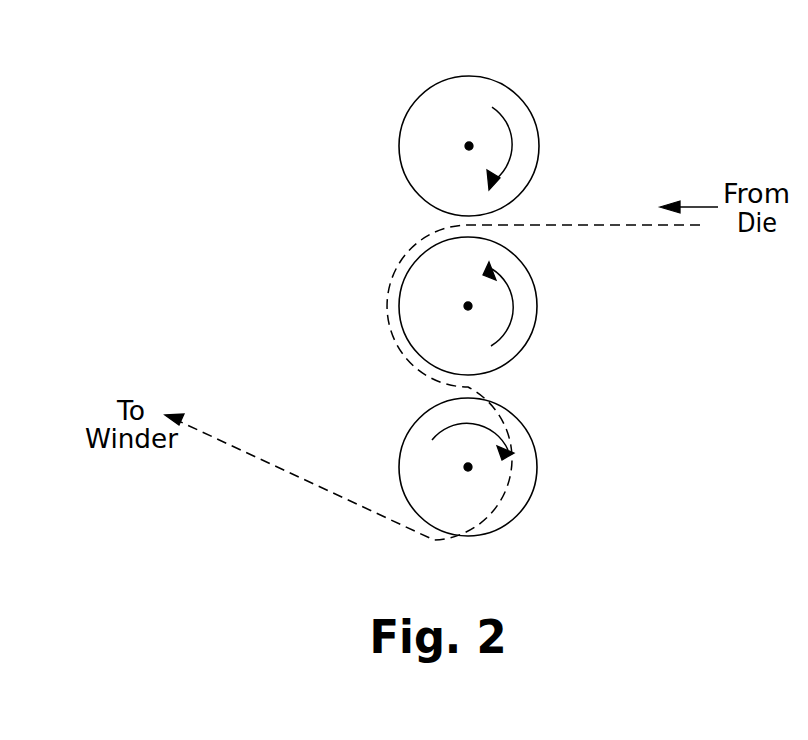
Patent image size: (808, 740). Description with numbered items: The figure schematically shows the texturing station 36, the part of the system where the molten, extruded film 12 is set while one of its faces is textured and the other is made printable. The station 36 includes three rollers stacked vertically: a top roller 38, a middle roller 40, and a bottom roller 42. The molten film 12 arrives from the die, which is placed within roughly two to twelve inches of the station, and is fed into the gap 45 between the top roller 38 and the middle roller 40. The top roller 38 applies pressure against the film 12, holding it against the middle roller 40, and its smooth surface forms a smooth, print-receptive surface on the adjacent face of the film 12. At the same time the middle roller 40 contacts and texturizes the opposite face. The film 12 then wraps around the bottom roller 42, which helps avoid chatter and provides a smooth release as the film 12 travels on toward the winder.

The texturing station 36 is at (300, 113).
The top roller 38 is at (478, 95).
The middle roller 40 is at (518, 320).
The bottom roller 42 is at (525, 483).
The film 12 is at (636, 222).
The gap 45 is at (443, 222).